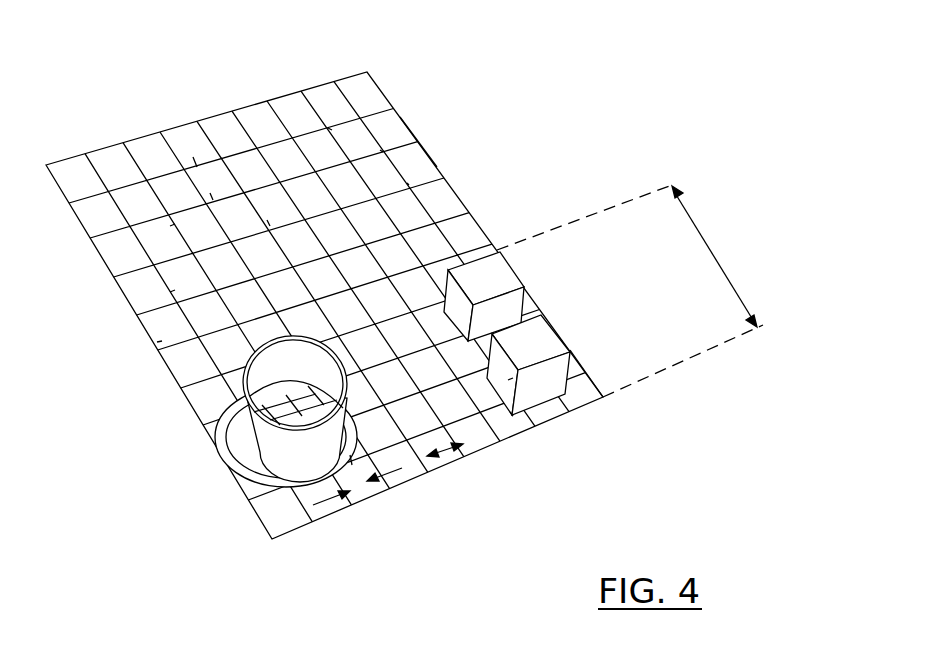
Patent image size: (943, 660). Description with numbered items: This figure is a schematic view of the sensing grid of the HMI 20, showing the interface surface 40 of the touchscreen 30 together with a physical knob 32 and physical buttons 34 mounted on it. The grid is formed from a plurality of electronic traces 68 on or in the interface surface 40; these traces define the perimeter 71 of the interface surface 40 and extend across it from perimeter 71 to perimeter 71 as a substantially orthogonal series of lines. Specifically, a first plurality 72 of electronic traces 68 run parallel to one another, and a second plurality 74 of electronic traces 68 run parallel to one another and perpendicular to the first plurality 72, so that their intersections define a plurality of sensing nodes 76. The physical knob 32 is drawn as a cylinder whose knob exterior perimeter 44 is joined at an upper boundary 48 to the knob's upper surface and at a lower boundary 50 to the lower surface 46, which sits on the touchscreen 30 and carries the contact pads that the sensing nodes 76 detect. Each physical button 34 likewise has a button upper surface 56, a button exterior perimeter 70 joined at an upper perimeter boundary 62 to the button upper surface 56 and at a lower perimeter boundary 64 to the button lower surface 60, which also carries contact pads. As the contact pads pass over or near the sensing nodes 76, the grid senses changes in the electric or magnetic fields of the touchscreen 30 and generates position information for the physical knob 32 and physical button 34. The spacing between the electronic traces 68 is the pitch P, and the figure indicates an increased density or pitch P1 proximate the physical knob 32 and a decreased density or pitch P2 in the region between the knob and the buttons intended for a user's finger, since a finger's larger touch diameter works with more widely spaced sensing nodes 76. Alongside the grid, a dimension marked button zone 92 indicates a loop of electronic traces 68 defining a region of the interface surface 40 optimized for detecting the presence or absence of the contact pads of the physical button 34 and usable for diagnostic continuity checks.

The HMI 20 is at (640, 286).
The touchscreen 30 is at (613, 313).
The physical knob 32 is at (267, 465).
The physical button 34 is at (568, 342).
The interface surface 40 is at (483, 221).
The knob exterior perimeter 44 is at (268, 478).
The lower surface 46 is at (228, 402).
The upper boundary 48 is at (228, 392).
The lower boundary 50 is at (352, 457).
The button upper surface 56 is at (642, 387).
The upper perimeter boundary 62 is at (603, 397).
The button lower surface 60 is at (555, 443).
The lower perimeter boundary 64 is at (513, 415).
The electronic traces 68 is at (437, 167).
The button exterior perimeter 70 is at (513, 378).
The perimeter 71 is at (157, 342).
The first plurality of electronic traces 72 is at (267, 220).
The second plurality of electronic traces 74 is at (170, 226).
The sensing nodes 76 is at (407, 183).
The button zone 92 is at (727, 275).
The pitch P is at (406, 511).
The increased density pitch P1 is at (342, 492).
The decreased density pitch P2 is at (448, 460).